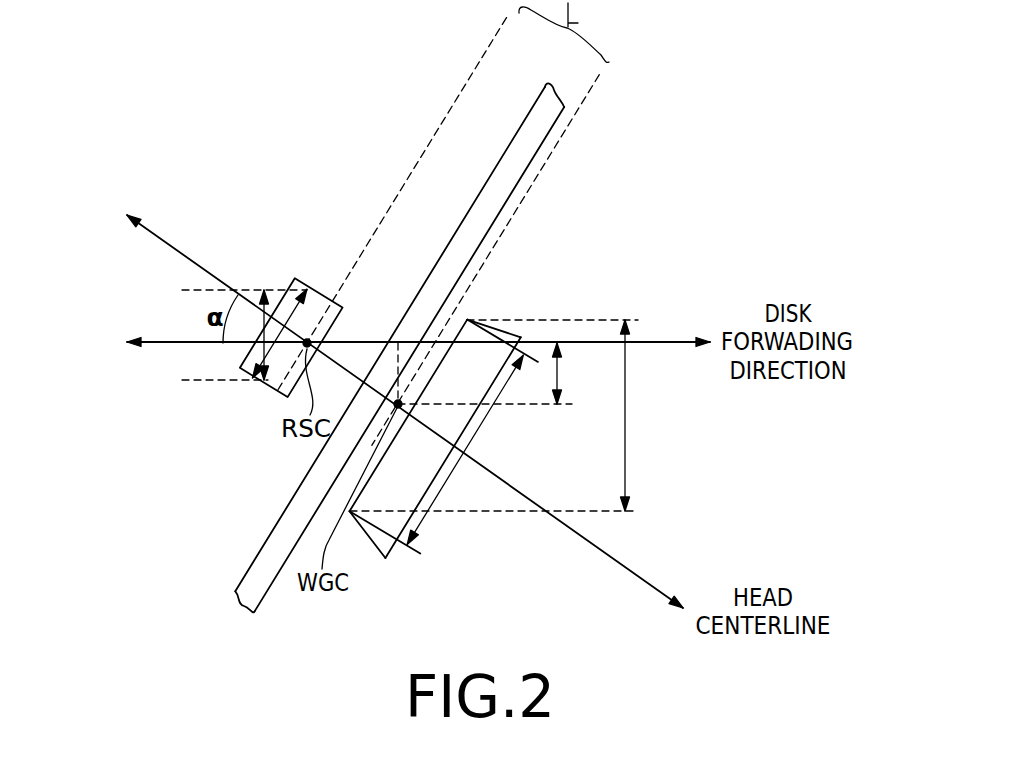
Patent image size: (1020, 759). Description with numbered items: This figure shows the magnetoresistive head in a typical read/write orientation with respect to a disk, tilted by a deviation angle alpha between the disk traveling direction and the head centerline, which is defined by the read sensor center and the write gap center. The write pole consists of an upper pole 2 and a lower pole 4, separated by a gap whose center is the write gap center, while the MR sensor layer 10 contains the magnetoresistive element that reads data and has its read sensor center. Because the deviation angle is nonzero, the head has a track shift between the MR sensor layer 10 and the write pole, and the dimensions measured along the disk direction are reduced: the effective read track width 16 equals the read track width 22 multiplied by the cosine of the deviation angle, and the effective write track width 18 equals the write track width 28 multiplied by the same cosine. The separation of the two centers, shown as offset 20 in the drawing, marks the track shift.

The upper pole 2 is at (382, 543).
The lower pole 4 is at (543, 127).
The MR sensor layer 10 is at (323, 313).
The effective read track width 16 is at (262, 328).
The effective write track width 18 is at (509, 415).
The write gap center offset 20 is at (574, 373).
The read track width 22 is at (287, 315).
The write track width 28 is at (448, 482).